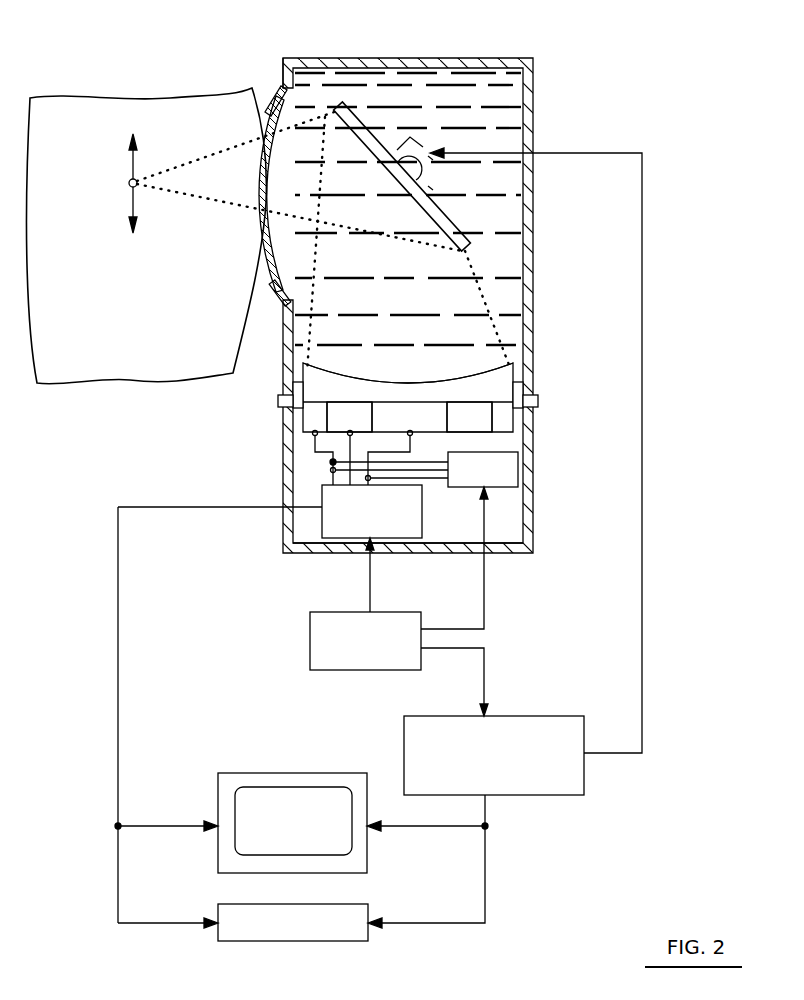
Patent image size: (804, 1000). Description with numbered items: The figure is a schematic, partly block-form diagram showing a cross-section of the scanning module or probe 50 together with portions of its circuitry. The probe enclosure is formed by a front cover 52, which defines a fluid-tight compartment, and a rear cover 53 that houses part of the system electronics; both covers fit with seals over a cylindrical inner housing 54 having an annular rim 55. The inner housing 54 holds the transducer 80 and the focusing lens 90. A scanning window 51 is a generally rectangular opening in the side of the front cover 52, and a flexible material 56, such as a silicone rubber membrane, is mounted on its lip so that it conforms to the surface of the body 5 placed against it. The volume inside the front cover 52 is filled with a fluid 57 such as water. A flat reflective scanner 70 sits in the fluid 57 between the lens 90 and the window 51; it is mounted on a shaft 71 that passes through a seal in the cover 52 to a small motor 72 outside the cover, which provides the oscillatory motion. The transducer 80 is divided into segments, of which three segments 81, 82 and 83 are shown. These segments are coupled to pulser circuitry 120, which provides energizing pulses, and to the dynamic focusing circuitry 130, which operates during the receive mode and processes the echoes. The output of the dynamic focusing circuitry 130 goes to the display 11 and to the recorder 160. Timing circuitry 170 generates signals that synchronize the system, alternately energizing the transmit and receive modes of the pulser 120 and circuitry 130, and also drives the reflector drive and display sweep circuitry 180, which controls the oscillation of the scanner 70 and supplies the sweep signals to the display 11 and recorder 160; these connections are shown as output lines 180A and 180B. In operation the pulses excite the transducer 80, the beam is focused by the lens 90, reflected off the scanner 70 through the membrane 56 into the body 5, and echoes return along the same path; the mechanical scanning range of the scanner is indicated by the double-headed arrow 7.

The body 5 is at (78, 362).
The double-headed arrow 7 is at (130, 194).
The display 11 is at (243, 782).
The scanning module or probe 50 is at (200, 413).
The scanning window 51 is at (287, 117).
The front cover 52 is at (283, 338).
The rear cover 53 is at (533, 505).
The inner housing 54 is at (407, 405).
The annular rim 55 is at (278, 402).
The flexible material 56 is at (262, 267).
The fluid 57 is at (497, 82).
The reflective scanner 70 is at (371, 136).
The shaft 71 is at (422, 170).
The motor 72 is at (416, 147).
The transducer 80 is at (386, 392).
The transducer segment 81 is at (422, 410).
The transducer segment 82 is at (475, 410).
The transducer segment 83 is at (313, 434).
The focusing lens 90 is at (412, 383).
The pulser circuitry 120 is at (518, 486).
The dynamic focusing circuitry 130 is at (423, 515).
The recorder 160 is at (368, 930).
The timing circuitry 170 is at (310, 642).
The reflector drive and display sweep circuitry 180 is at (404, 722).
The reflector drive output line 180A is at (593, 753).
The display sweep output line 180B is at (487, 810).